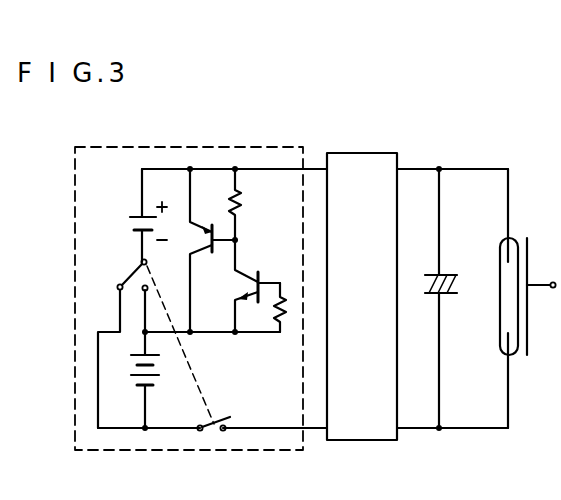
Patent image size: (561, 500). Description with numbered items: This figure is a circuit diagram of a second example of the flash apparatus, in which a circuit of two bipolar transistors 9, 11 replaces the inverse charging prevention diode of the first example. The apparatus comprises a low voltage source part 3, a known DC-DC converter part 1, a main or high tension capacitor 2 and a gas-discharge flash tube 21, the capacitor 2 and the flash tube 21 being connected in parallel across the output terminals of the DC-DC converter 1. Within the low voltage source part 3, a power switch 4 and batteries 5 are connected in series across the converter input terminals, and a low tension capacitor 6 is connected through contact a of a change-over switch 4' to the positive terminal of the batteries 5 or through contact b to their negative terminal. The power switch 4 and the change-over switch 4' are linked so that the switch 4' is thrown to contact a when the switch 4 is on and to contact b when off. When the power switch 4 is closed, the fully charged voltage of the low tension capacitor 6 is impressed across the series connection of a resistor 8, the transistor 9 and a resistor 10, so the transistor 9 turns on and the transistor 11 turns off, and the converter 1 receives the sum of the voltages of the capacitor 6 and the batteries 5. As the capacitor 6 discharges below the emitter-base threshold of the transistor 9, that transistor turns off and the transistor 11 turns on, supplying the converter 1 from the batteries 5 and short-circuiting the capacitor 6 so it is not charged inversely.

The DC-DC converter part 1 is at (373, 432).
The main capacitor 2 is at (426, 296).
The low voltage source part 3 is at (254, 147).
The power switch 4 is at (194, 348).
The change-over switch 4' is at (127, 266).
The batteries 5 is at (131, 374).
The low tension capacitor 6 is at (130, 217).
The resistor 8 is at (249, 203).
The transistor 9 is at (243, 283).
The resistor 10 is at (287, 316).
The transistor 11 is at (203, 238).
The gas-discharge flash tube 21 is at (518, 245).